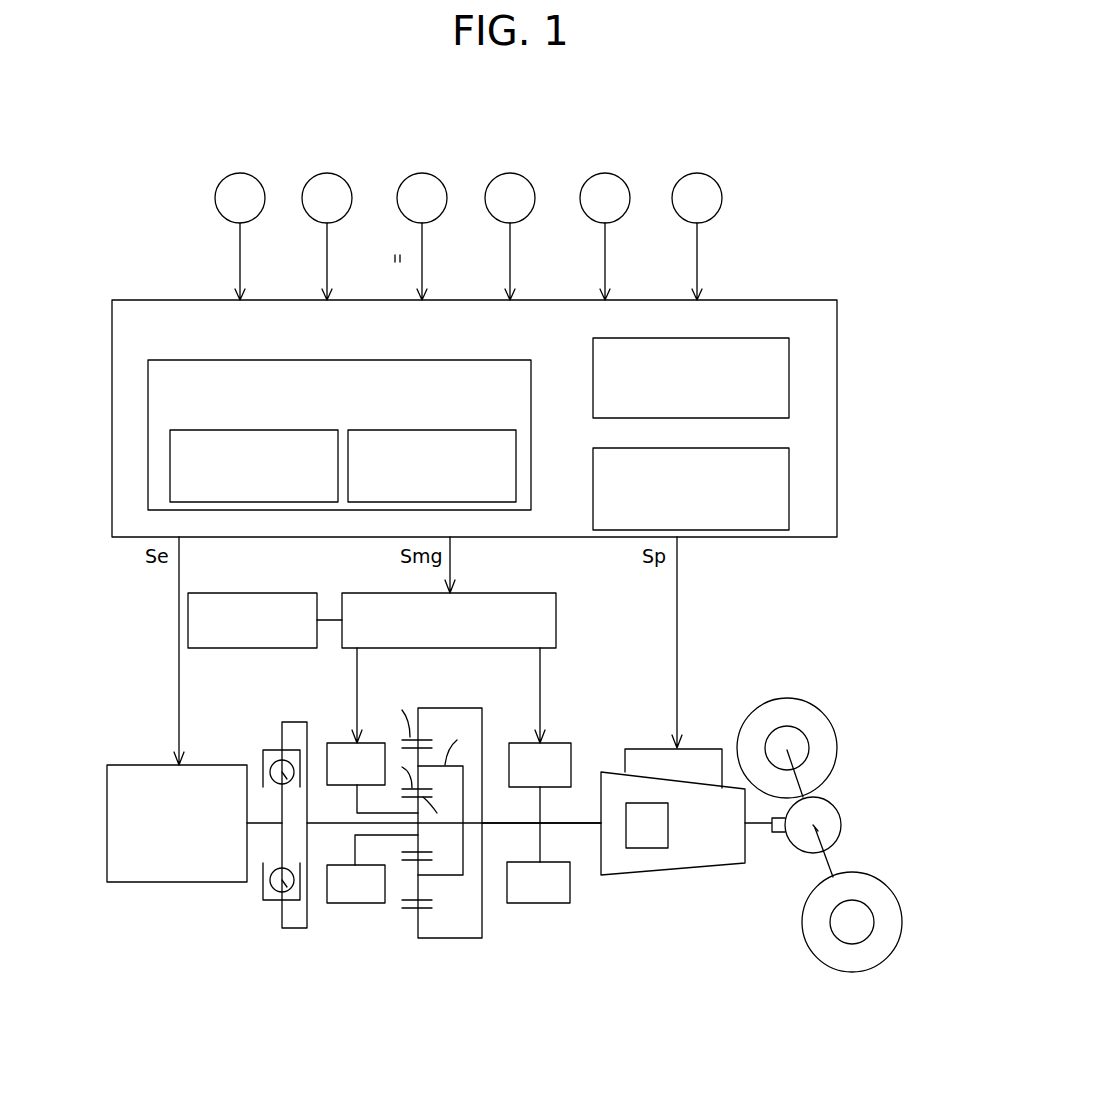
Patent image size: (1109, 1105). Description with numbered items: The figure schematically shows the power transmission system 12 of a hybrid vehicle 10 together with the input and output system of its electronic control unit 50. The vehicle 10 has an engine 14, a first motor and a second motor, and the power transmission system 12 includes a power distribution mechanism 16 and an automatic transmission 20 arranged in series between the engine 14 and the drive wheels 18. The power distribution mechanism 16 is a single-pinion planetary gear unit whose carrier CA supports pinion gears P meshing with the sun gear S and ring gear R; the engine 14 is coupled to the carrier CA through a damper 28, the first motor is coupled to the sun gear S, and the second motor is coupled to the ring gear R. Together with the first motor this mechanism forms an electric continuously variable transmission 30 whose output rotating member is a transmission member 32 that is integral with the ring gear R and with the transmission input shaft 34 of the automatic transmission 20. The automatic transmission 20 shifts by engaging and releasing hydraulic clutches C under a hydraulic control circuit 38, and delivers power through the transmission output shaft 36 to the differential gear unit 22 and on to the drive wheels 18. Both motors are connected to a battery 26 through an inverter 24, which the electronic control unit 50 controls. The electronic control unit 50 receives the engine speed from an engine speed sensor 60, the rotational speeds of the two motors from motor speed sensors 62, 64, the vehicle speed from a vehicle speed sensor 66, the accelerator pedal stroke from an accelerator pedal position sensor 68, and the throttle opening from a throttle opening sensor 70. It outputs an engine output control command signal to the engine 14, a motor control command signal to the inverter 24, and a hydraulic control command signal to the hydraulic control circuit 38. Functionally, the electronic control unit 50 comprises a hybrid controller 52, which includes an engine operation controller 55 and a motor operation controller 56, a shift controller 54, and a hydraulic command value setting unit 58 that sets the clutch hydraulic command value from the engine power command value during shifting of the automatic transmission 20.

The vehicle 10 is at (762, 122).
The power transmission system 12 is at (690, 645).
The engine 14 is at (139, 866).
The power distribution mechanism 16 is at (412, 945).
The drive wheels 18 is at (822, 730).
The automatic transmission 20 is at (677, 857).
The differential gear unit 22 is at (825, 823).
The inverter 24 is at (519, 604).
The battery 26 is at (276, 604).
The damper 28 is at (270, 903).
The electric continuously variable transmission 30 is at (460, 972).
The transmission member 32 is at (493, 827).
The transmission input shaft 34 is at (580, 827).
The transmission output shaft 36 is at (762, 832).
The hydraulic control circuit 38 is at (685, 755).
The electronic control unit 50 is at (788, 318).
The hybrid controller 52 is at (482, 368).
The shift controller 54 is at (728, 346).
The engine operation controller 55 is at (276, 432).
The motor operation controller 56 is at (455, 432).
The hydraulic command value setting unit 58 is at (726, 458).
The engine speed sensor 60 is at (241, 190).
The motor speed sensor 62 is at (328, 190).
The motor speed sensor 64 is at (423, 190).
The vehicle speed sensor 66 is at (511, 190).
The accelerator pedal position sensor 68 is at (606, 190).
The throttle opening sensor 70 is at (698, 190).